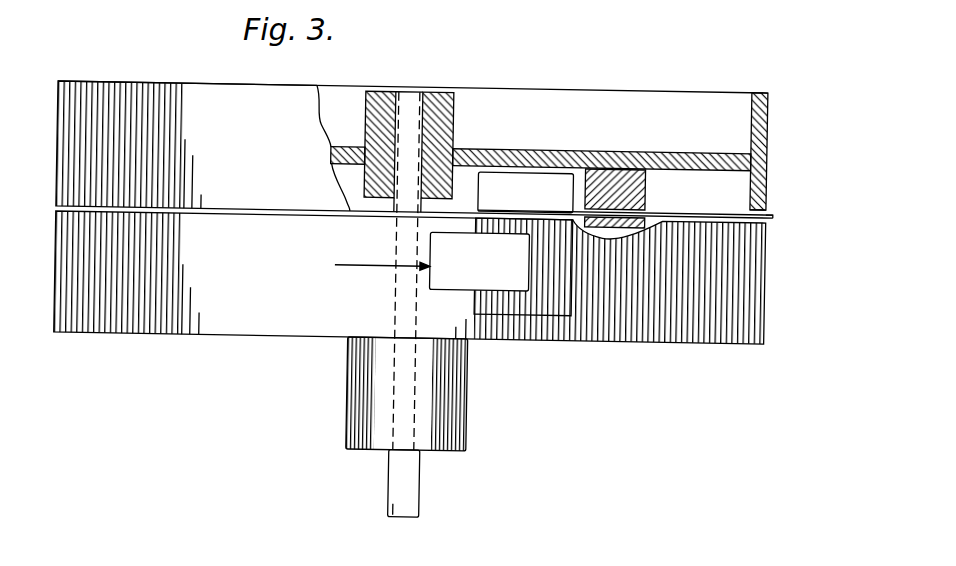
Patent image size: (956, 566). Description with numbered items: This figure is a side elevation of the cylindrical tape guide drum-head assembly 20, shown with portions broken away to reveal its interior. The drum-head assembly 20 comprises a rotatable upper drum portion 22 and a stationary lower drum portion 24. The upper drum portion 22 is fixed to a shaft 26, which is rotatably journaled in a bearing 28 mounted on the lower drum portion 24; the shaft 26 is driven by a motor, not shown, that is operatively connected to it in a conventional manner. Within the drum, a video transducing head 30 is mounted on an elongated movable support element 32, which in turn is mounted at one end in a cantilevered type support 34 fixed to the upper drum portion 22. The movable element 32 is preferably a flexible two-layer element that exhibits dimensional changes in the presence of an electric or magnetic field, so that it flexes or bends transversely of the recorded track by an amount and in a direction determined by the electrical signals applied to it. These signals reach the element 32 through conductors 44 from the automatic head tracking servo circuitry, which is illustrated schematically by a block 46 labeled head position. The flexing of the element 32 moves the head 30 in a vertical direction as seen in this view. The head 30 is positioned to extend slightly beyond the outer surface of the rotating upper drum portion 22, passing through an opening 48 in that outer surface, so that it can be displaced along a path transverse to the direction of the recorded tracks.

The drum-head assembly 20 is at (661, 64).
The upper drum portion 22 is at (769, 125).
The lower drum portion 24 is at (770, 295).
The shaft 26 is at (415, 86).
The bearing 28 is at (472, 406).
The video transducing head 30 is at (776, 205).
The elongated movable support element 32 is at (703, 201).
The cantilevered type support 34 is at (688, 187).
The conductors 44 is at (576, 218).
The block 46 is at (492, 267).
The opening 48 is at (764, 201).